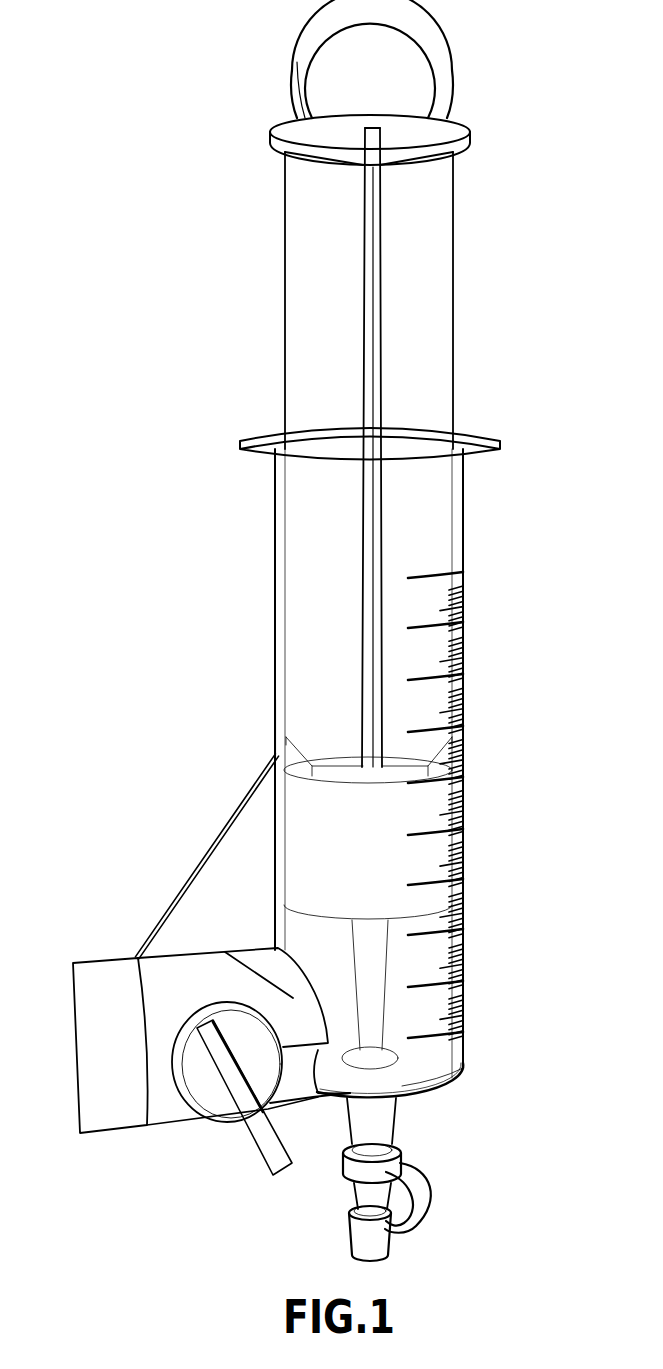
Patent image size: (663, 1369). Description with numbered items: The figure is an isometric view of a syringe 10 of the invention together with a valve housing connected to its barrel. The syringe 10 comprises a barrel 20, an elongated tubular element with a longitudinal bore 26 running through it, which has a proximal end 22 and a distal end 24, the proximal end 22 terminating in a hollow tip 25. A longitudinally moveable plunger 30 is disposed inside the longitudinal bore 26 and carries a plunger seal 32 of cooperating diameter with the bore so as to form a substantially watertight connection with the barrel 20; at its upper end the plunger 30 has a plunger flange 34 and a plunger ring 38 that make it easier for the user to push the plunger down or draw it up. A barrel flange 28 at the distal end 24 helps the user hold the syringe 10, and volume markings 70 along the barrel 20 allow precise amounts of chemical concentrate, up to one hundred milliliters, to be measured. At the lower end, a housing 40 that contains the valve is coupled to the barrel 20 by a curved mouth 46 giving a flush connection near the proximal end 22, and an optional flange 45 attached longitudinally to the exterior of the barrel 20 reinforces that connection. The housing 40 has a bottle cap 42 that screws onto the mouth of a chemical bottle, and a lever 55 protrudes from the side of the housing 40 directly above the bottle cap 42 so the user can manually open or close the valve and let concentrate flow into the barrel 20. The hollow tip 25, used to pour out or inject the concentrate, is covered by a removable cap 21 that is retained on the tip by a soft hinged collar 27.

The syringe 10 is at (206, 600).
The barrel 20 is at (276, 706).
The removable cap 21 is at (355, 1231).
The proximal end 22 is at (463, 1071).
The distal end 24 is at (465, 471).
The hollow tip 25 is at (380, 1126).
The longitudinal bore 26 is at (298, 935).
The hinged collar 27 is at (418, 1199).
The barrel flange 28 is at (240, 446).
The plunger 30 is at (296, 305).
The plunger seal 32 is at (302, 825).
The plunger flange 34 is at (470, 140).
The plunger ring 38 is at (300, 50).
The housing 40 is at (170, 1003).
The bottle cap 42 is at (83, 1097).
The flange 45 is at (217, 870).
The mouth 46 is at (225, 955).
The lever 55 is at (262, 1157).
The volume markings 70 is at (463, 976).